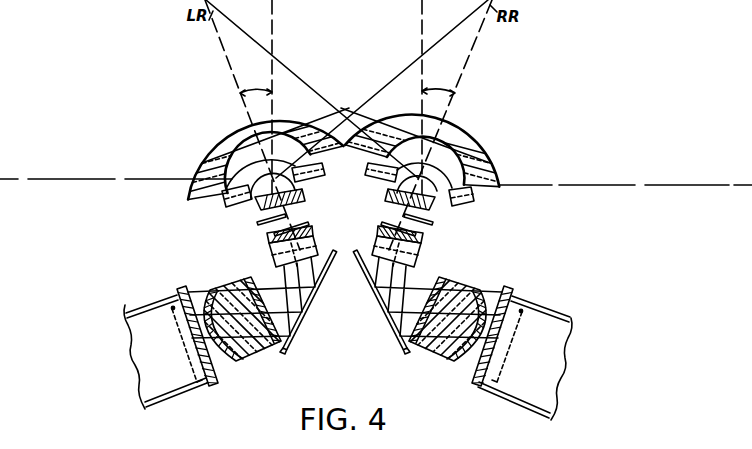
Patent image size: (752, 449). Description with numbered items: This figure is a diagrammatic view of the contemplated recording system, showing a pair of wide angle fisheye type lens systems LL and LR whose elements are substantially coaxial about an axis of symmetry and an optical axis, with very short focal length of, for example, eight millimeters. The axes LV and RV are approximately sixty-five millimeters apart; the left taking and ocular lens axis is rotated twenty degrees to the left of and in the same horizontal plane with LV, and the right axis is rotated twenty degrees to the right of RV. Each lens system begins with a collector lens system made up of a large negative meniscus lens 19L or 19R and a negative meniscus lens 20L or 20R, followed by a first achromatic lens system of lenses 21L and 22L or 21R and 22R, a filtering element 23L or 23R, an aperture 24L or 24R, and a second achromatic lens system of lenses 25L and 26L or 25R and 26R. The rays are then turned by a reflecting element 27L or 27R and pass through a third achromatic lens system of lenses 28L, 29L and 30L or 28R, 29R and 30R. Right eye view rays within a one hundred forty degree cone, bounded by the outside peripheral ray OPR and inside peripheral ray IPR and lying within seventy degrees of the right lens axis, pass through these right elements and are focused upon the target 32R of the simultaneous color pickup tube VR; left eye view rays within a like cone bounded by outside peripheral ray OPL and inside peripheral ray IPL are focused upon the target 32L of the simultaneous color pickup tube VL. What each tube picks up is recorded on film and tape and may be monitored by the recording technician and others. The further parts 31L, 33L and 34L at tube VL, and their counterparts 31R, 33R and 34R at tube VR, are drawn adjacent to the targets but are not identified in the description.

The large negative meniscus lens 19L is at (189, 199).
The large negative meniscus lens 19R is at (501, 196).
The negative meniscus lens 20L is at (226, 207).
The negative meniscus lens 20R is at (466, 207).
The lens of first achromatic lens system 21L is at (307, 181).
The lens of first achromatic lens system 21R is at (387, 181).
The lens of first achromatic lens system 22L is at (306, 198).
The lens of first achromatic lens system 22R is at (386, 198).
The filtering element 23L is at (261, 223).
The filtering element 23R is at (428, 222).
The aperture 24L is at (309, 224).
The aperture 24R is at (386, 224).
The lens of second achromatic lens system 25L is at (268, 239).
The lens of second achromatic lens system 25R is at (423, 240).
The lens of second achromatic lens system 26L is at (271, 253).
The lens of second achromatic lens system 26R is at (412, 254).
The reflecting element 27L is at (313, 301).
The reflecting element 27R is at (376, 301).
The lens of third achromatic lens system 28L is at (286, 349).
The lens of third achromatic lens system 28R is at (405, 349).
The lens of third achromatic lens system 29L is at (259, 352).
The lens of third achromatic lens system 29R is at (431, 352).
The lens of third achromatic lens system 30L is at (241, 362).
The lens of third achromatic lens system 30R is at (449, 363).
The left lower rail 31L is at (208, 388).
The right lower rail 31R is at (478, 389).
The target 32L is at (180, 290).
The target 32R is at (511, 290).
The left upper rail 33L is at (168, 298).
The right upper rail 33R is at (526, 297).
The left image plane 34L is at (185, 347).
The right image plane 34R is at (506, 347).
The left lens system LL is at (197, 89).
The right lens system LR is at (511, 101).
The left reference axis LV is at (273, 8).
The right reference axis RV is at (420, 4).
The inside peripheral ray IPL is at (389, 81).
The inside peripheral ray IPR is at (303, 81).
The outside peripheral ray OPL is at (77, 178).
The outside peripheral ray OPR is at (612, 184).
The simultaneous color pickup tube VL is at (114, 356).
The simultaneous color pickup tube VR is at (586, 372).